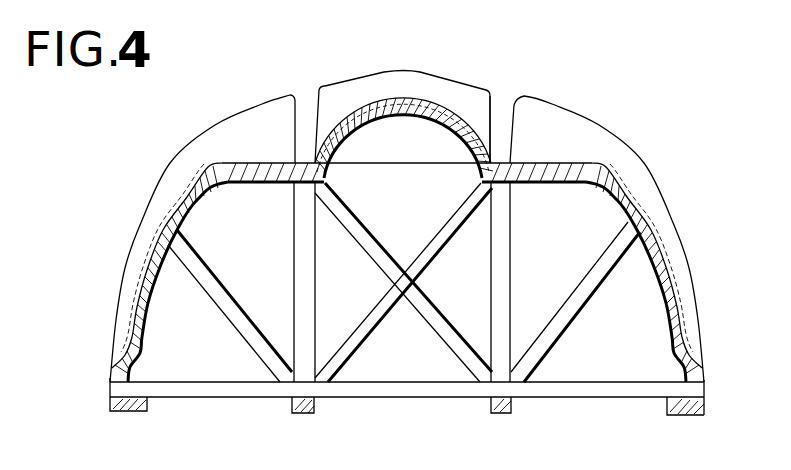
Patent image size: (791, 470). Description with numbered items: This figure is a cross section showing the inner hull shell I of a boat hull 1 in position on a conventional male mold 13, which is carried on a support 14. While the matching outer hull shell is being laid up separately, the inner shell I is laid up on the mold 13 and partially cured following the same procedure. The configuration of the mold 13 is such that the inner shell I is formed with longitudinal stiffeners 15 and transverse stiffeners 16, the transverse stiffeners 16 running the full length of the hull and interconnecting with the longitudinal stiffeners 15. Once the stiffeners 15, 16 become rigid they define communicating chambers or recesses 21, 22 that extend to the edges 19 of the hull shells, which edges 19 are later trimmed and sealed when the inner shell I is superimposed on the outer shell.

The building structure 1 is at (167, 167).
The male mold 13 is at (665, 333).
The support 14 is at (293, 252).
The longitudinal stiffeners 15 is at (305, 165).
The transverse stiffeners 16 is at (441, 92).
The edges 19 is at (110, 380).
The communicating chambers or recesses 21 is at (503, 107).
The communicating chambers or recesses 22 is at (552, 142).